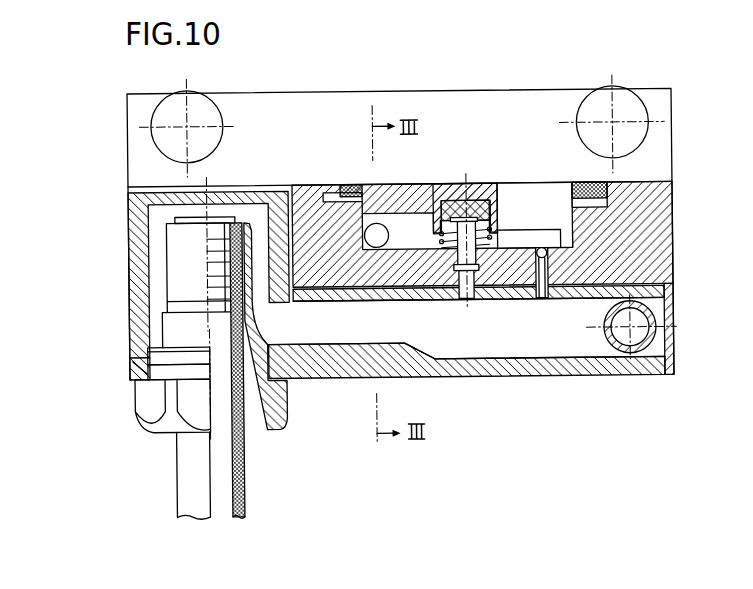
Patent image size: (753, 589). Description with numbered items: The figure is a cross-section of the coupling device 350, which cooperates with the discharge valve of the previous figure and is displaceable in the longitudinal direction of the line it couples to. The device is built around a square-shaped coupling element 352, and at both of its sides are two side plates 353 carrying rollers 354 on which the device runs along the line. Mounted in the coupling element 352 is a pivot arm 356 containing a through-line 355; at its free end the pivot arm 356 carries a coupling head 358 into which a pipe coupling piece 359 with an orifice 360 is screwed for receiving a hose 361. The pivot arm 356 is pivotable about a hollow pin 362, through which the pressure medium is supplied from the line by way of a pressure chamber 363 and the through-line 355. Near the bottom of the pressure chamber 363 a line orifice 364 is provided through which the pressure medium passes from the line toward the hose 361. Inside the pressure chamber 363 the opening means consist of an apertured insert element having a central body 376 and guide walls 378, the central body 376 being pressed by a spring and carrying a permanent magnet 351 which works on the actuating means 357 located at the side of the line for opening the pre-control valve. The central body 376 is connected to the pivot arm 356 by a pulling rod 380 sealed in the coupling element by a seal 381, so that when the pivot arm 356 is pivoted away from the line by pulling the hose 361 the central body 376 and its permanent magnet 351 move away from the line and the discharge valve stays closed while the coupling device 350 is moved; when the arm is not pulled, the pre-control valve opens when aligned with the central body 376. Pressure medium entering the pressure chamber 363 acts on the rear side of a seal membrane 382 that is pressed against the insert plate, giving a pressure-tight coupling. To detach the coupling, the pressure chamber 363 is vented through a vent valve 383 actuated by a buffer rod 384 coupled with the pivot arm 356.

The coupling element 350 is at (416, 76).
The permanent magnet 351 is at (455, 188).
The square-shaped coupling element 352 is at (648, 212).
The side plate 353 is at (665, 161).
The roller 354 is at (638, 135).
The through-line 355 is at (470, 346).
The pivot arm 356 is at (581, 368).
The actuating means 357 is at (476, 164).
The coupling head 358 is at (132, 359).
The pipe coupling piece 359 is at (148, 410).
The orifice 360 is at (250, 418).
The hose 361 is at (244, 494).
The hollow pin 362 is at (640, 346).
The pressure chamber 363 is at (555, 243).
The line orifice 364 is at (370, 240).
The central body 376 is at (491, 188).
The guide walls 378 is at (538, 221).
The pulling rod 380 is at (460, 281).
The seal 381 is at (474, 281).
The seal membrane 382 is at (346, 190).
The vent valve 383 is at (547, 258).
The buffer rod 384 is at (547, 278).